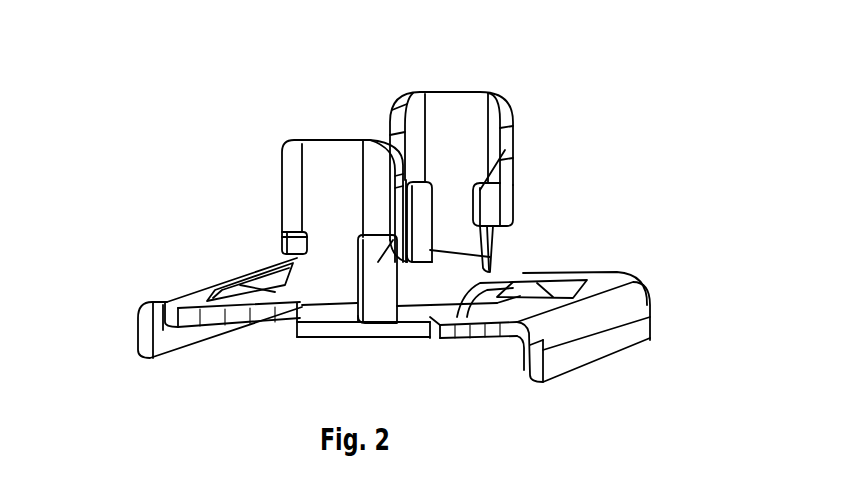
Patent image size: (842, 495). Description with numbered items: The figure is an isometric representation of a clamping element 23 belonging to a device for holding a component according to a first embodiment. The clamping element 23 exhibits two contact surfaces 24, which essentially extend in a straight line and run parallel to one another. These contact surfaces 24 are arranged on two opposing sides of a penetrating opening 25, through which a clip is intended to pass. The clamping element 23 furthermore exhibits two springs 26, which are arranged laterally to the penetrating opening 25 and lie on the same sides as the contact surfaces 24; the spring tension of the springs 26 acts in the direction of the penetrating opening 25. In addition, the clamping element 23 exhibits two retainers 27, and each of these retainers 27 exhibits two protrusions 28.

The clamping element 23 is at (690, 254).
The contact surface 24 is at (138, 375).
The penetrating opening 25 is at (283, 287).
The spring 26 is at (240, 272).
The retainer 27 is at (320, 160).
The protrusion 28 is at (490, 200).